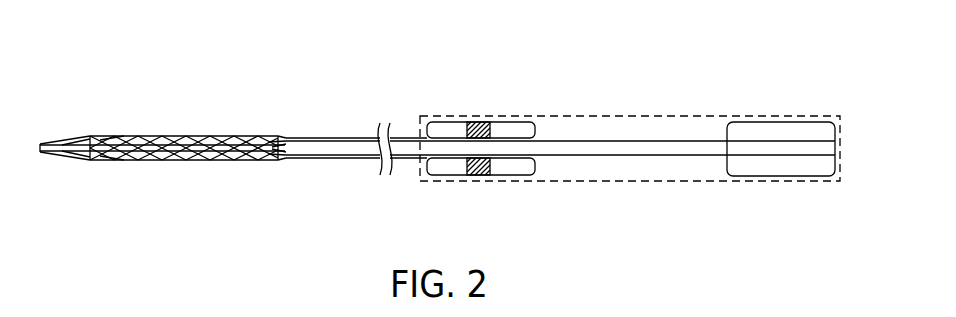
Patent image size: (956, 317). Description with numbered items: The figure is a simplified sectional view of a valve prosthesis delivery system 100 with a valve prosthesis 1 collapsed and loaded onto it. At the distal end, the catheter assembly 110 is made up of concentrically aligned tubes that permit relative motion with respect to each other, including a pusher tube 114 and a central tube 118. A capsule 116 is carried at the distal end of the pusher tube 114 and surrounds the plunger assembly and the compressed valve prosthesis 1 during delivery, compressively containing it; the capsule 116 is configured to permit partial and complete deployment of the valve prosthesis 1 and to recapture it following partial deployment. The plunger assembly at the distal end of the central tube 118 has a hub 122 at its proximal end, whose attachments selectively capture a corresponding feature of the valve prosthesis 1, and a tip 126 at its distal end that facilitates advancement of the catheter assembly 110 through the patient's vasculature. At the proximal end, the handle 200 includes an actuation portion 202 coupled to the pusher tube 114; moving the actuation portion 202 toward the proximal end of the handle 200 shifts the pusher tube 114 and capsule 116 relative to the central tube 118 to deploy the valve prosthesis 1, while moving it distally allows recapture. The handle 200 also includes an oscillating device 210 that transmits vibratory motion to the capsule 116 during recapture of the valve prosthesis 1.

The delivery system 100 is at (237, 48).
The valve prosthesis 1 is at (203, 137).
The capsule 116 is at (132, 137).
The tip 126 is at (70, 138).
The hub 122 is at (280, 161).
The central tube 118 is at (300, 159).
The pusher tube 114 is at (355, 160).
The catheter assembly 110 is at (336, 170).
The handle 200 is at (609, 106).
The actuation portion 202 is at (522, 172).
The oscillating device 210 is at (477, 123).